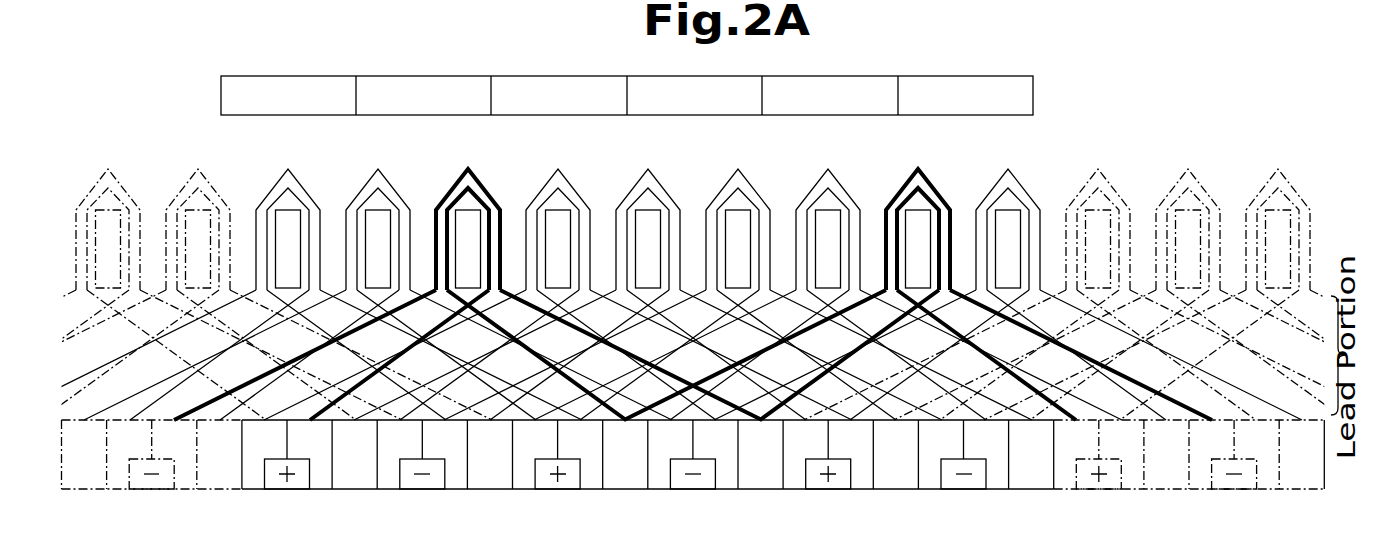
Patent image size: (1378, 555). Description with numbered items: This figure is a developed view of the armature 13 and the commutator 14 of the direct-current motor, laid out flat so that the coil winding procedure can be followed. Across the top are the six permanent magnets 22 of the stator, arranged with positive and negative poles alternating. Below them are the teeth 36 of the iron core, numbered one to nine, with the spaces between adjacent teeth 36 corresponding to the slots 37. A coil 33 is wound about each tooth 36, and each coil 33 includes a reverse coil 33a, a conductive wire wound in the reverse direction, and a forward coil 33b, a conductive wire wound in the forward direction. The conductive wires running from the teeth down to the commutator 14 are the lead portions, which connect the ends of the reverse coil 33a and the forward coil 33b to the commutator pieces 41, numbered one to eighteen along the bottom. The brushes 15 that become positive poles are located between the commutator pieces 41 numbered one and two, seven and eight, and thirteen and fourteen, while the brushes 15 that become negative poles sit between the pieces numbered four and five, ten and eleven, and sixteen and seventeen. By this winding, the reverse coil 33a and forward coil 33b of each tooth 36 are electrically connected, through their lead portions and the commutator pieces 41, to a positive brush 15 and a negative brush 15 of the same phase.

The armature 13 is at (689, 252).
The commutator 14 is at (693, 485).
The brush 15 is at (295, 491).
The permanent magnet 22 is at (336, 83).
The coil 33 is at (766, 193).
The reverse coil 33a is at (486, 194).
The forward coil 33b is at (476, 190).
The tooth 36 is at (462, 216).
The slot 37 is at (787, 202).
The commutator piece 41 is at (392, 481).